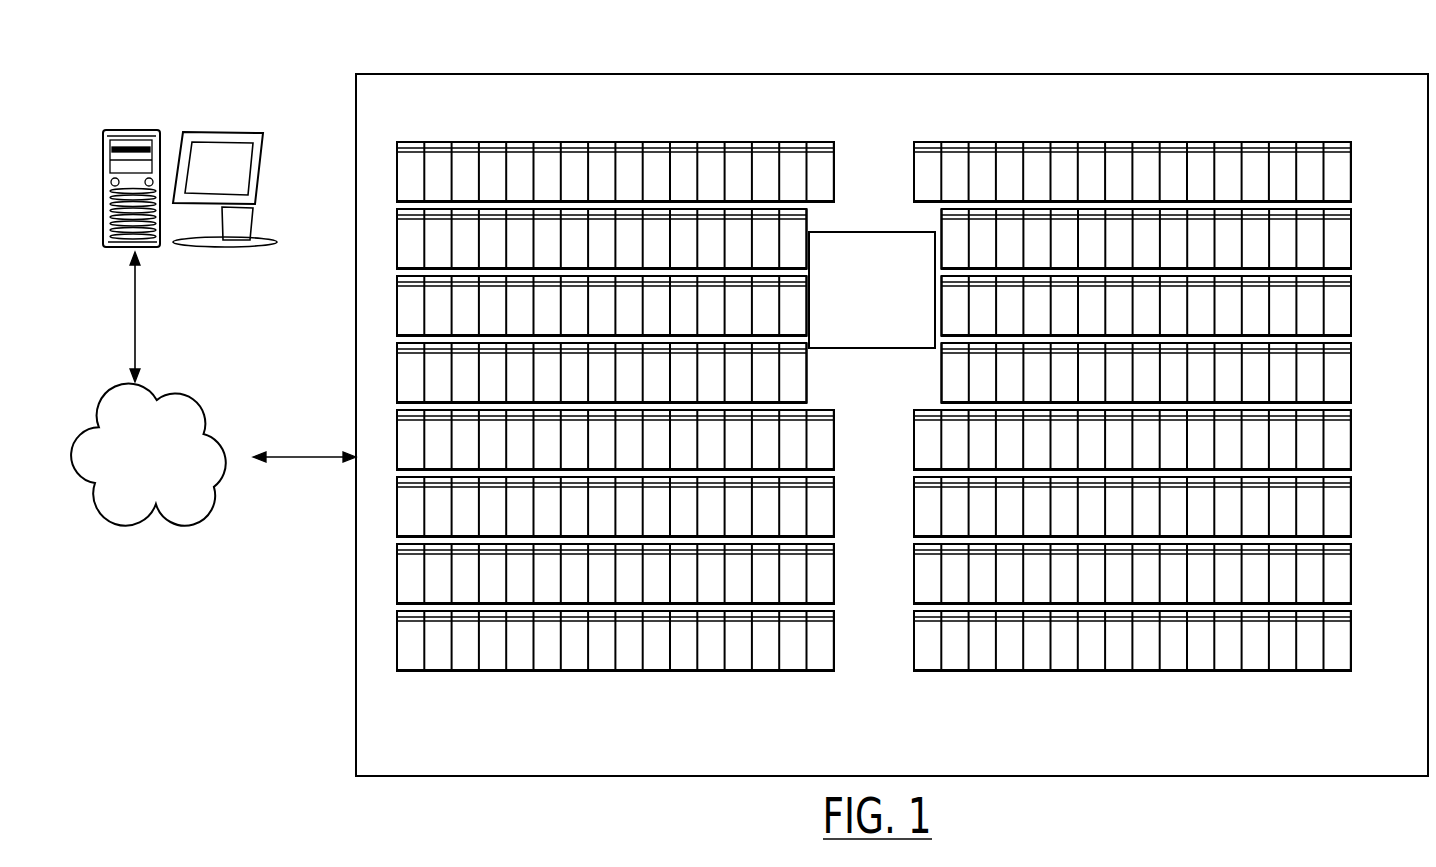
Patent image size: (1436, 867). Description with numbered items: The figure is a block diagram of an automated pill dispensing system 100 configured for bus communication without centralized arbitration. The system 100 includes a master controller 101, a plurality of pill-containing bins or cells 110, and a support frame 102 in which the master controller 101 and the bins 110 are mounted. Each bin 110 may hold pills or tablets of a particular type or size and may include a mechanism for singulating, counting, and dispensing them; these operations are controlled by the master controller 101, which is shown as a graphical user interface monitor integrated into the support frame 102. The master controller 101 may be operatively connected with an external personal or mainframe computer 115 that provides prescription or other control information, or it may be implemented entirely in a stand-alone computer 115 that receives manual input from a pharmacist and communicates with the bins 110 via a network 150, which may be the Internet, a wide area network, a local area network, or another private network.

The automated pill dispensing system 100 is at (892, 425).
The master controller 101 is at (853, 336).
The support frame 102 is at (1362, 756).
The pill-containing bins 110 is at (1359, 137).
The computer 115 is at (223, 130).
The network 150 is at (137, 485).